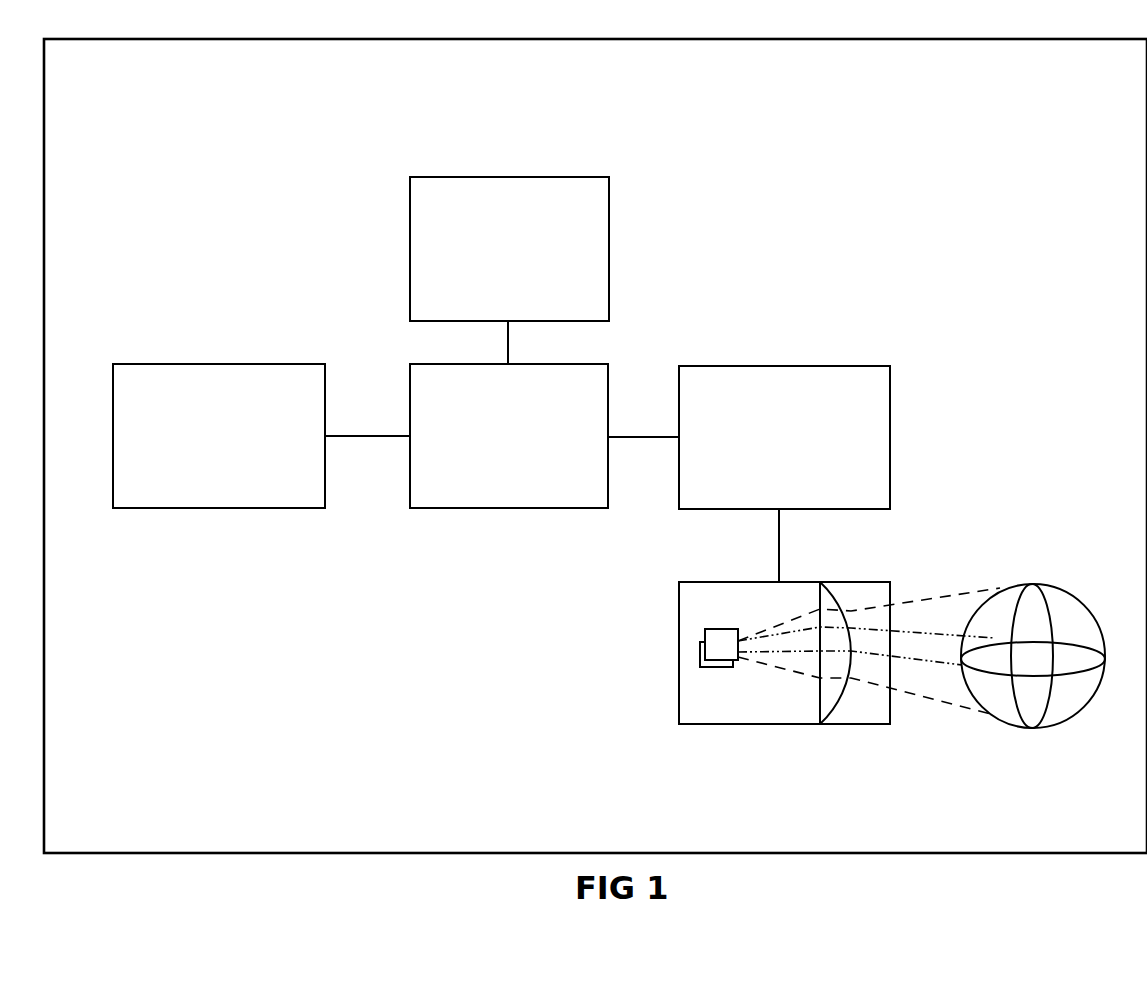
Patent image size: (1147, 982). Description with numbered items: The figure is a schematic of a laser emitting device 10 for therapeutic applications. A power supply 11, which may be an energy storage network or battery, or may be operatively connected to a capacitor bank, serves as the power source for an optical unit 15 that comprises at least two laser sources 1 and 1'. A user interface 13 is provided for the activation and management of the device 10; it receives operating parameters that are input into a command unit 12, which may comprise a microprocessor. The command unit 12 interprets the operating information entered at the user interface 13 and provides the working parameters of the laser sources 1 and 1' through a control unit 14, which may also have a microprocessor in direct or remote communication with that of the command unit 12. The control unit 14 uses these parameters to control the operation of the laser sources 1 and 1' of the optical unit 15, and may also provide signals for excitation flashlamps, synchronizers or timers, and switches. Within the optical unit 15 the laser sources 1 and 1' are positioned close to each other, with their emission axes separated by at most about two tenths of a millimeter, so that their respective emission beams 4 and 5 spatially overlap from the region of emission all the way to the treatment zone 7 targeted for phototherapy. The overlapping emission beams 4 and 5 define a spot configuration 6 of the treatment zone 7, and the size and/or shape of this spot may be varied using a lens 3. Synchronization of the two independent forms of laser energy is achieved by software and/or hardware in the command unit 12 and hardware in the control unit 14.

The laser emitting device 10 is at (779, 170).
The power supply 11 is at (150, 364).
The command unit 12 is at (513, 509).
The user interface 13 is at (458, 177).
The control unit 14 is at (755, 366).
The optical unit 15 is at (679, 609).
The lens 3 is at (835, 724).
The laser source 1 is at (650, 664).
The laser source 1' is at (645, 686).
The emission beam 4 is at (930, 632).
The emission beam 5 is at (947, 698).
The spot configuration 6 is at (1053, 617).
The treatment zone 7 is at (1080, 708).